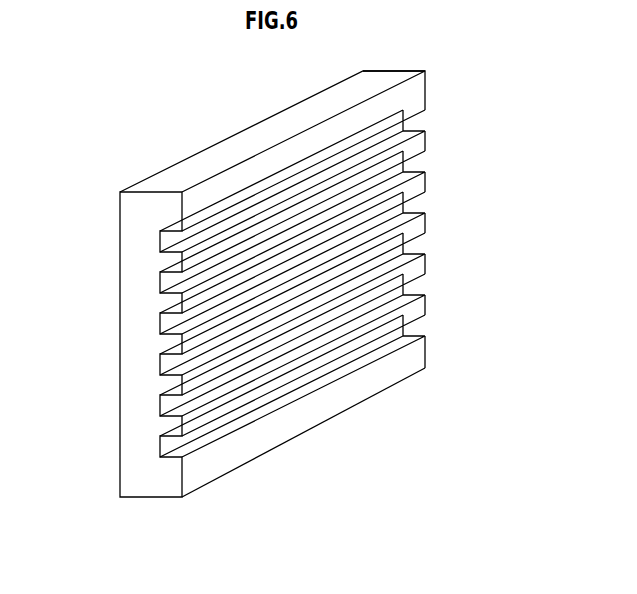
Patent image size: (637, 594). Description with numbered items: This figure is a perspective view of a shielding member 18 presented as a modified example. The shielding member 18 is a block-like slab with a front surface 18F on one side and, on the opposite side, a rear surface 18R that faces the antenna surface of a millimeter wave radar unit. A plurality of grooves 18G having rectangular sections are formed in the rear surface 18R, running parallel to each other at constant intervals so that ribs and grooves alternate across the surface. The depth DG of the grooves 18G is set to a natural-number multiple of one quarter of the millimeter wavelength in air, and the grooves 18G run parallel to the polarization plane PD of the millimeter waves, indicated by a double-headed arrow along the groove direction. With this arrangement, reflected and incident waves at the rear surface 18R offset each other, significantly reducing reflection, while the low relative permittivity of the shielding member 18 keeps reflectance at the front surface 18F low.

The shielding member 18 is at (180, 173).
The front surface 18F is at (120, 251).
The rear surface 18R is at (415, 90).
The grooves 18G is at (172, 324).
The polarization plane PD is at (412, 407).
The depth of the grooves DG is at (160, 457).